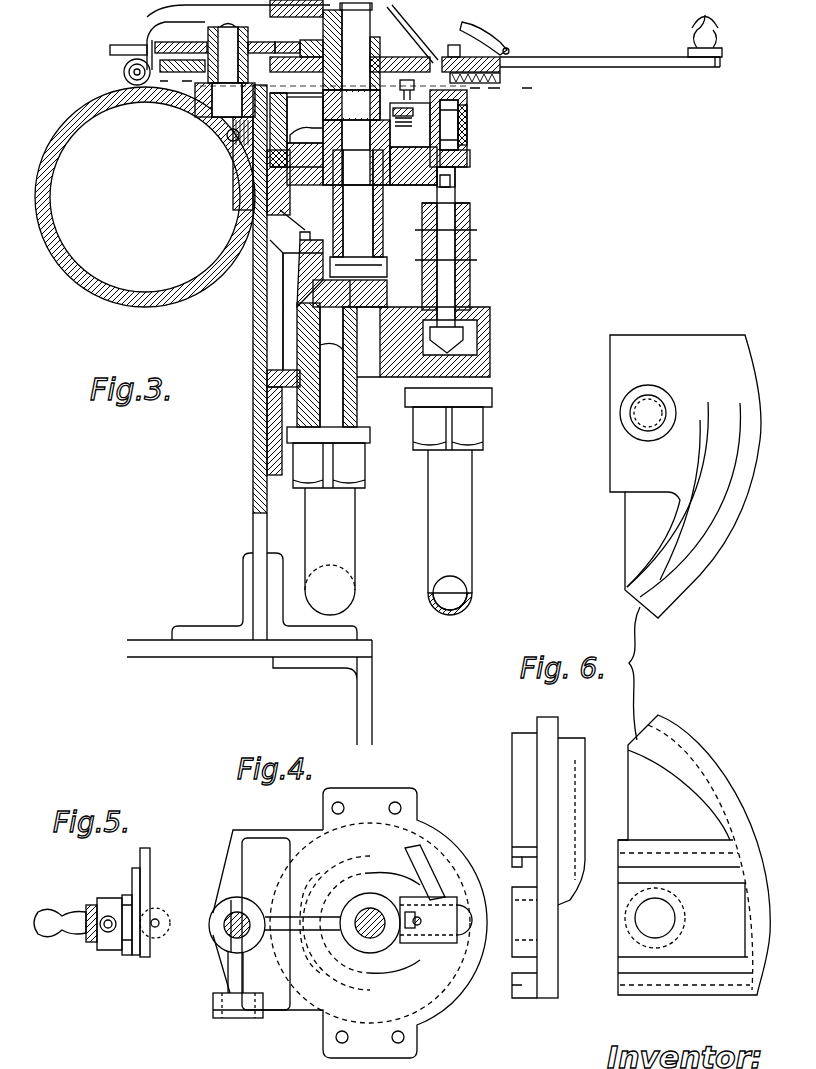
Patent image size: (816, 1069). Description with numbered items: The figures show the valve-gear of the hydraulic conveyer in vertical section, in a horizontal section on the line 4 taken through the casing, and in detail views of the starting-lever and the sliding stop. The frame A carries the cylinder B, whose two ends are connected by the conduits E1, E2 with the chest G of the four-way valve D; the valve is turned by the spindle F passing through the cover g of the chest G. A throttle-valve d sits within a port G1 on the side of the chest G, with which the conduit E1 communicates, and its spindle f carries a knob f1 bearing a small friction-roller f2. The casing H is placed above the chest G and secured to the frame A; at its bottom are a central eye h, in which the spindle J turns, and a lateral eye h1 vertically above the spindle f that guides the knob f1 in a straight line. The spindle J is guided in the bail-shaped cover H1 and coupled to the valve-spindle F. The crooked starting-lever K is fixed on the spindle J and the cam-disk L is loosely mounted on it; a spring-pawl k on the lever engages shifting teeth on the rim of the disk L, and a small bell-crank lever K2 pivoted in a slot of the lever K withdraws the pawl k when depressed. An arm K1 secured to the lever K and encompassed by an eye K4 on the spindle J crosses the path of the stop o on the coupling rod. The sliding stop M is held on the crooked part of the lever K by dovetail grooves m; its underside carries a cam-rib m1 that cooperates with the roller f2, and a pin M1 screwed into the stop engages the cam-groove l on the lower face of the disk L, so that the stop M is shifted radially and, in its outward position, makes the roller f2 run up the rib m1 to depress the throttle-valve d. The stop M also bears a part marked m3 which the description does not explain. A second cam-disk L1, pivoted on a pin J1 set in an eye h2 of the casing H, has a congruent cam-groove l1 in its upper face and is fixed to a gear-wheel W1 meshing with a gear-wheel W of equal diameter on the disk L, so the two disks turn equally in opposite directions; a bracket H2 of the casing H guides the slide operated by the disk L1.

In FIG. 3, the frame A is at (80, 97).
In FIG. 3, the cylinder B is at (45, 212).
In FIG. 3, the section line 4 is at (346, 85).
In FIG. 3, the stop o is at (100, 73).
In FIG. 3, the starting-lever K is at (640, 55).
In FIG. 5, the starting-lever K is at (105, 948).
In FIG. 3, the arm K1 is at (416, 34).
In FIG. 5, the arm K1 is at (122, 900).
In FIG. 3, the bell-crank lever K2 is at (474, 26).
In FIG. 3, the eye K4 is at (368, 6).
In FIG. 3, the spring-pawl k is at (452, 52).
In FIG. 3, the pin M1 is at (410, 78).
In FIG. 4, the pin M1 is at (418, 930).
In FIG. 3, the sliding stop M is at (460, 130).
In FIG. 4, the sliding stop M is at (432, 915).
In FIG. 5, the sliding stop M is at (142, 872).
In FIG. 6, the sliding stop M is at (486, 770).
In FIG. 3, the cam-rib m1 is at (410, 125).
In FIG. 6, the cam-rib m1 is at (678, 555).
In FIG. 6, the stop plate hole m3 is at (606, 940).
In FIG. 6, the dovetail grooves m is at (525, 868).
In FIG. 3, the cam-disk L1 is at (192, 38).
In FIG. 3, the gear-wheel W1 is at (263, 33).
In FIG. 3, the cam-groove l1 is at (290, 35).
In FIG. 3, the cover H1 is at (316, 35).
In FIG. 3, the gear-wheel W is at (385, 54).
In FIG. 3, the pin J1 is at (225, 71).
In FIG. 4, the pin J1 is at (228, 925).
In FIG. 3, the spindle J is at (360, 58).
In FIG. 4, the spindle J is at (362, 927).
In FIG. 3, the casing H is at (353, 173).
In FIG. 4, the casing H is at (350, 923).
In FIG. 4, the bracket H2 is at (238, 1018).
In FIG. 3, the cam-groove l is at (290, 108).
In FIG. 4, the cam-groove l is at (328, 882).
In FIG. 3, the cam-disk L is at (305, 122).
In FIG. 3, the central eye h is at (367, 173).
In FIG. 3, the lateral eye h1 is at (401, 172).
In FIG. 3, the eye h2 is at (208, 128).
In FIG. 4, the eye h2 is at (250, 912).
In FIG. 3, the knob f1 is at (440, 175).
In FIG. 3, the friction-roller f2 is at (470, 165).
In FIG. 3, the valve-spindle F is at (357, 243).
In FIG. 3, the cover g is at (297, 277).
In FIG. 3, the valve D is at (330, 312).
In FIG. 3, the valve-chest G is at (350, 345).
In FIG. 3, the port G1 is at (490, 342).
In FIG. 3, the spindle f is at (455, 268).
In FIG. 3, the throttle-valve d is at (430, 342).
In FIG. 3, the conduit E1 is at (472, 527).
In FIG. 3, the conduit E2 is at (355, 535).